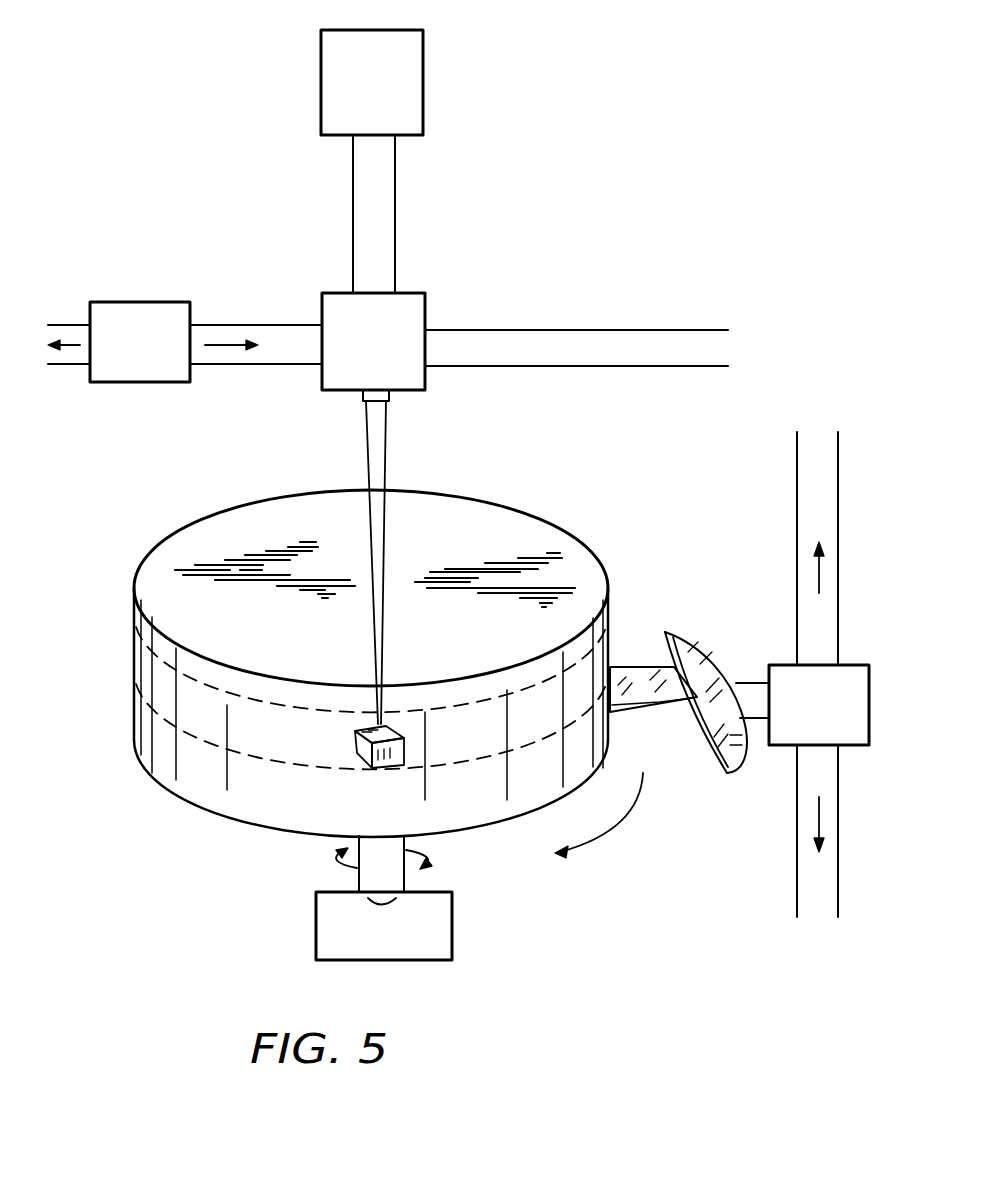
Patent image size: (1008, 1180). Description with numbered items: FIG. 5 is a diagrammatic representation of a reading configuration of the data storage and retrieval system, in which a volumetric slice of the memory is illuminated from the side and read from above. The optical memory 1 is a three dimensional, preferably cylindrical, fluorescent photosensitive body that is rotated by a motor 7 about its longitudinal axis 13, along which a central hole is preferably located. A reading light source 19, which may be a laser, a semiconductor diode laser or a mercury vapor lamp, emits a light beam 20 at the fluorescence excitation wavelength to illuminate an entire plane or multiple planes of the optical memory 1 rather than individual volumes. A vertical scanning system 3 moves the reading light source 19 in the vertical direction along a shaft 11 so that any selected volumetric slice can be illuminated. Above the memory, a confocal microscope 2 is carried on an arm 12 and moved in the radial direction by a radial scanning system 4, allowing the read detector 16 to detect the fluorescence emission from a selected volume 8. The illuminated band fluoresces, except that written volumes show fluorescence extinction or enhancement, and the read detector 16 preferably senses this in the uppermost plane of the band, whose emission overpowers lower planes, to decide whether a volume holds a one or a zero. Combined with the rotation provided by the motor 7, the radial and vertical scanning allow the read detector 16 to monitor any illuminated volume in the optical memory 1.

The optical memory 1 is at (605, 761).
The confocal microscope 2 is at (322, 297).
The vertical scanning system 3 is at (775, 664).
The radial scanning system 4 is at (152, 383).
The motor 7 is at (453, 912).
The selected volume 8 is at (404, 737).
The shaft 11 is at (797, 612).
The arm 12 is at (260, 374).
The longitudinal axis 13 is at (357, 885).
The read detector 16 is at (423, 68).
The reading light source 19 is at (726, 773).
The light beam 20 is at (647, 708).